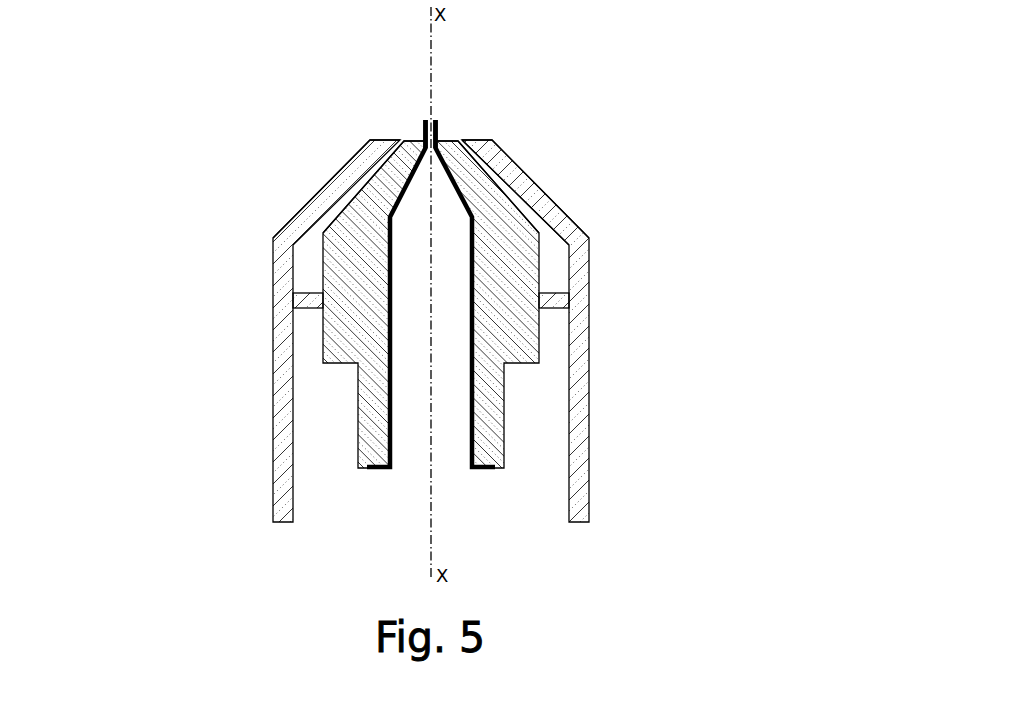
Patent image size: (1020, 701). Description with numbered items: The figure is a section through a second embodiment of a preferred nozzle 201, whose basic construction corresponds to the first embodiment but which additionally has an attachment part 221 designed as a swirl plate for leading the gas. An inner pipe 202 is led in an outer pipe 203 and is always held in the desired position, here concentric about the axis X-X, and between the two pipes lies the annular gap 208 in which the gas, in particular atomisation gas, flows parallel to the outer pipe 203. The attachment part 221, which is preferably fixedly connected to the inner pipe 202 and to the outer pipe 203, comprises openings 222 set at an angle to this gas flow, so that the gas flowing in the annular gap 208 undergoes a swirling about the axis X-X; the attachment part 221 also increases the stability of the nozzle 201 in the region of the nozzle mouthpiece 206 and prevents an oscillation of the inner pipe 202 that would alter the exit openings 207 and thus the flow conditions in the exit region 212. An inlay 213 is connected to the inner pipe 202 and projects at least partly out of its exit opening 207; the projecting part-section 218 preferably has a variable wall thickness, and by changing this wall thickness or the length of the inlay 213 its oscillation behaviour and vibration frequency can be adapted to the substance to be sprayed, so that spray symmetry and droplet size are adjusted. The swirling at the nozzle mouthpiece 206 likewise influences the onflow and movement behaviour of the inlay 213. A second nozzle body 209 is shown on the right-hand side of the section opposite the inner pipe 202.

The nozzle 201 is at (196, 102).
The inner pipe 202 is at (367, 453).
The outer pipe 203 is at (578, 278).
The nozzle mouthpiece 206 is at (152, 93).
The exit opening 207 is at (418, 125).
The annular gap 208 is at (552, 258).
The second nozzle body 209 is at (459, 126).
The exit region 212 is at (474, 92).
The inlay 213 is at (477, 470).
The part-section of the inlay 218 is at (424, 124).
The attachment part 221 is at (558, 318).
The openings 222 is at (306, 298).